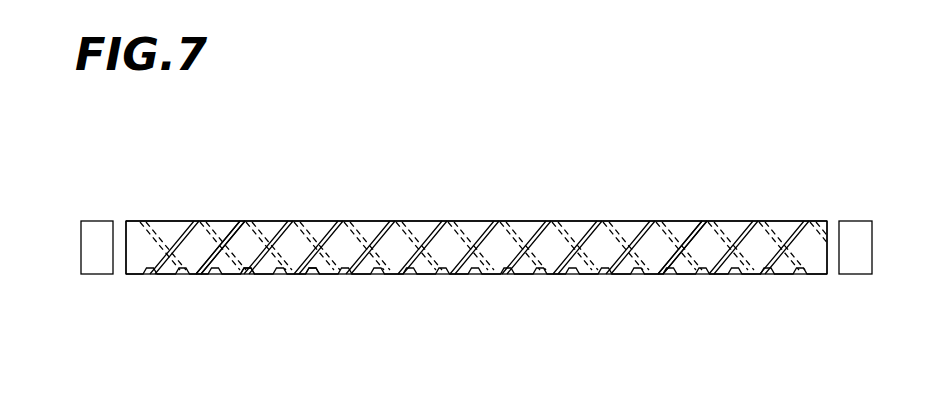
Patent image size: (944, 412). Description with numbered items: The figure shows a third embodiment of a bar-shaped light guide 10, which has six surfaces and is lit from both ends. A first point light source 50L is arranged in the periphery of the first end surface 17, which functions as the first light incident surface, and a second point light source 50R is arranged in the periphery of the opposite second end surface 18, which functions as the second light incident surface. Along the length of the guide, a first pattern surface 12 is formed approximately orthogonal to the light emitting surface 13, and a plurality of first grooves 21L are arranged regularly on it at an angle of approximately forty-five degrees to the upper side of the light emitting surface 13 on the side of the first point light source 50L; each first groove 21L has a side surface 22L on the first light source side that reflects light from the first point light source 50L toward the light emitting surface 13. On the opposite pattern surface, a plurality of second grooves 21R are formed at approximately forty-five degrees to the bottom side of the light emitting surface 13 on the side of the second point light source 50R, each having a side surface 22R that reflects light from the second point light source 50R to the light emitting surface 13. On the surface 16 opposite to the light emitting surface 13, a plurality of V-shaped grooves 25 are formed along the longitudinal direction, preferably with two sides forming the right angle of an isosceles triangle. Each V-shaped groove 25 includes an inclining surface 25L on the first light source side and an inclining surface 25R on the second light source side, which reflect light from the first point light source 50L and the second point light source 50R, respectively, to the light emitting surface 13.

The bar-shaped light guide 10 is at (389, 214).
The first pattern surface 12 is at (560, 242).
The light emitting surface 13 is at (478, 221).
The surface opposite to the light emitting surface 16 is at (418, 276).
The first end surface 17 is at (123, 246).
The second end surface 18 is at (827, 260).
The first grooves 21L is at (234, 224).
The second grooves 21R is at (698, 256).
The side surface on the first light source side 22L is at (203, 256).
The side surface on the second light source side 22R is at (712, 252).
The V-shaped grooves 25 is at (281, 329).
The inclining surface on the first light source side 25L is at (247, 276).
The inclining surface on the second light source side 25R is at (311, 276).
The first point light source 50L is at (80, 248).
The second point light source 50R is at (853, 235).